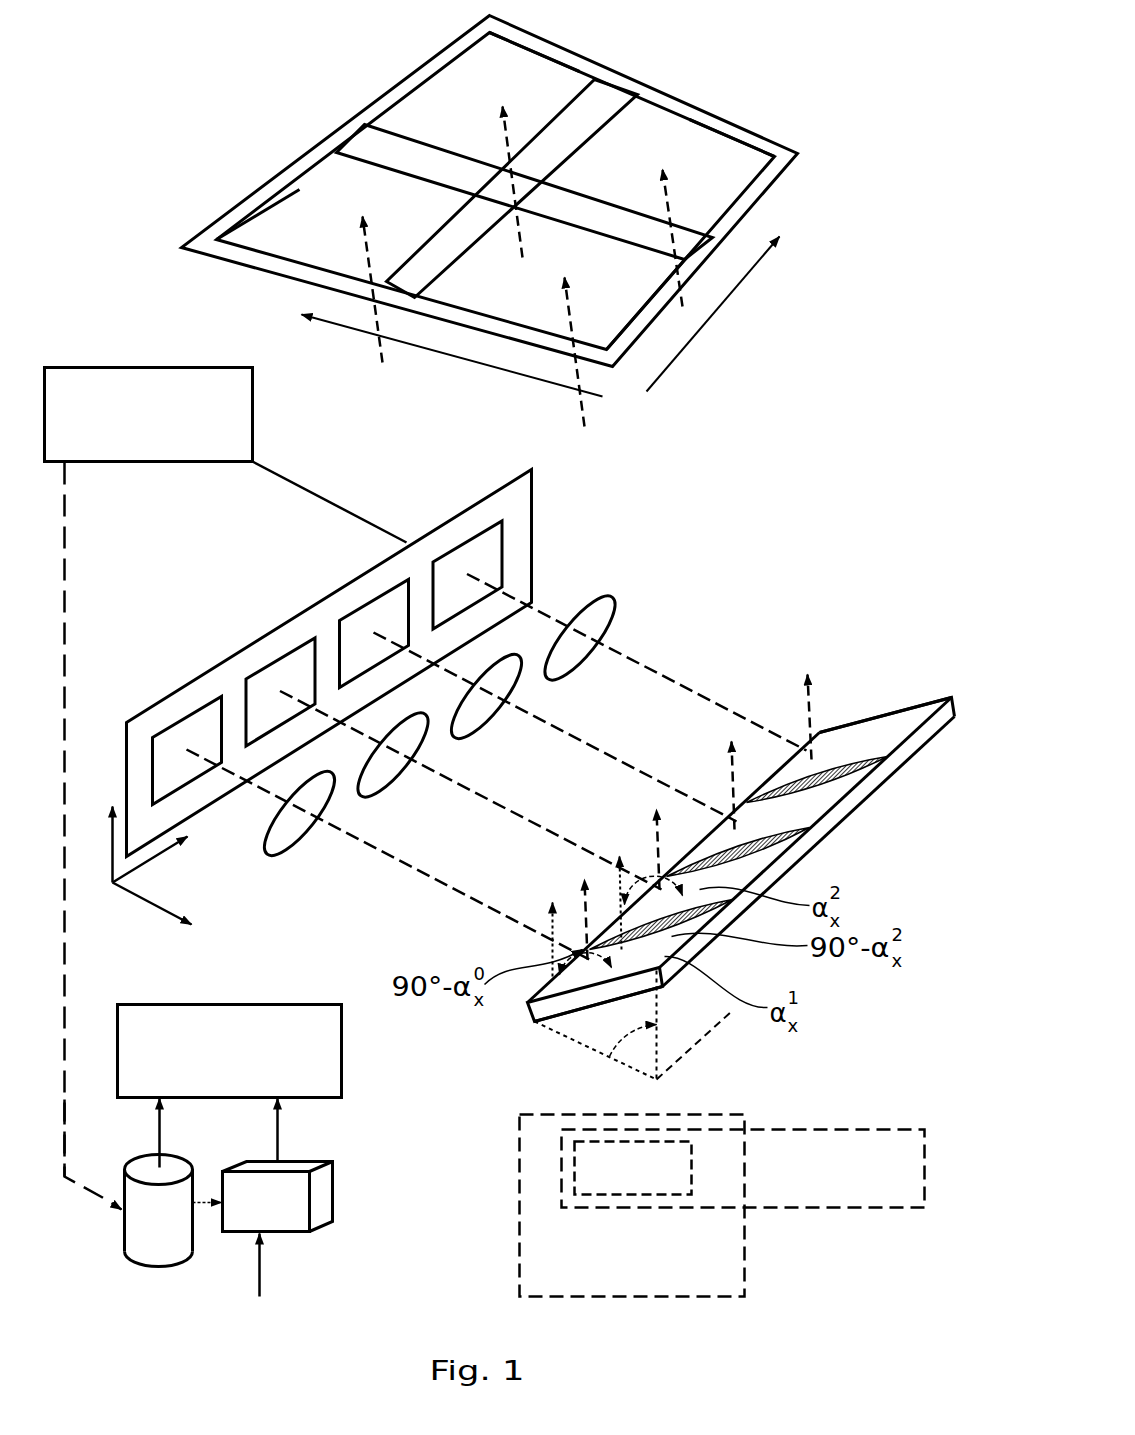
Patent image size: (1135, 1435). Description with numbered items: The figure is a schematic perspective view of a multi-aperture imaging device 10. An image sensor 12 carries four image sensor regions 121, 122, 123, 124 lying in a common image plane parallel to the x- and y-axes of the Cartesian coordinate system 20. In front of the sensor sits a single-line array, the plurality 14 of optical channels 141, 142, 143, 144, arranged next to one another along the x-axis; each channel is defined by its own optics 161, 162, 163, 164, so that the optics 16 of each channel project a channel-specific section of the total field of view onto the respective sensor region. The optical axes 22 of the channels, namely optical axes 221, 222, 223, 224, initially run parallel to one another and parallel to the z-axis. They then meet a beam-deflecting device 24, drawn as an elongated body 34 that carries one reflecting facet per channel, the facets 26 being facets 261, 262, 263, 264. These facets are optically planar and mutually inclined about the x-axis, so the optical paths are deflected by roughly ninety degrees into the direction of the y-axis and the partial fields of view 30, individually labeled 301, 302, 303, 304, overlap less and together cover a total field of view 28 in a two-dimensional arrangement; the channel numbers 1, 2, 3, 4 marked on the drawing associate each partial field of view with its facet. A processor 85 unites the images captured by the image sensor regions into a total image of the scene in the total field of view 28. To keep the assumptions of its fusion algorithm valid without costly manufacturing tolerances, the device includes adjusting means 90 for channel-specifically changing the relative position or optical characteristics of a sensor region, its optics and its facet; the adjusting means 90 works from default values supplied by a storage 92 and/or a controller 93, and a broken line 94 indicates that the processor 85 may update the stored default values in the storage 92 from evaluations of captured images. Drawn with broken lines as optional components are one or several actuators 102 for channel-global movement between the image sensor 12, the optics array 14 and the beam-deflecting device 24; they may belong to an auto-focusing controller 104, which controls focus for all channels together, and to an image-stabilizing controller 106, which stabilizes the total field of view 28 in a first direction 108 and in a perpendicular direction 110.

The multi-aperture imaging device 10 is at (646, 427).
The total field of view 28 is at (418, 72).
The partial fields of view 30 is at (491, 215).
The partial field of view 301 is at (275, 187).
The partial field of view 302 is at (637, 327).
The partial field of view 303 is at (533, 47).
The partial field of view 304 is at (693, 115).
The direction 1 is at (486, 584).
The direction 2 is at (624, 579).
The direction 3 is at (631, 465).
The direction 4 is at (748, 460).
The first direction 108 is at (463, 360).
The perpendicular direction 110 is at (727, 303).
The processor 85 is at (152, 368).
The image sensor 12 is at (329, 663).
The image sensor region 121 is at (182, 718).
The image sensor region 122 is at (277, 660).
The image sensor region 123 is at (370, 602).
The image sensor region 124 is at (456, 550).
The plurality of optical channels 14 is at (497, 750).
The optical channel 141 is at (318, 845).
The optical channel 142 is at (423, 797).
The optical channel 143 is at (520, 737).
The optical channel 144 is at (613, 677).
The optics 16 is at (497, 776).
The optics 161 is at (290, 855).
The optics 162 is at (393, 795).
The optics 163 is at (486, 740).
The optics 164 is at (577, 680).
The optical axes 22 is at (497, 776).
The optical axis 221 is at (400, 915).
The optical axis 222 is at (557, 835).
The optical axis 223 is at (627, 768).
The optical axis 224 is at (677, 685).
The Cartesian coordinate system 20 is at (113, 885).
The beam-deflecting device 24 is at (607, 1012).
The reflecting facets 26 is at (772, 812).
The reflecting facet 261 is at (668, 937).
The reflecting facet 262 is at (760, 848).
The reflecting facet 263 is at (830, 795).
The reflecting facet 264 is at (887, 730).
The beam-deflecting means 34 is at (742, 860).
The adjusting means 90 is at (342, 1053).
The storage 92 is at (122, 1233).
The controller 93 is at (337, 1188).
The broken line 94 is at (93, 1193).
The actuators 102 is at (573, 1170).
The auto-focusing controller 104 is at (843, 1210).
The image-stabilizing controller 106 is at (518, 1256).